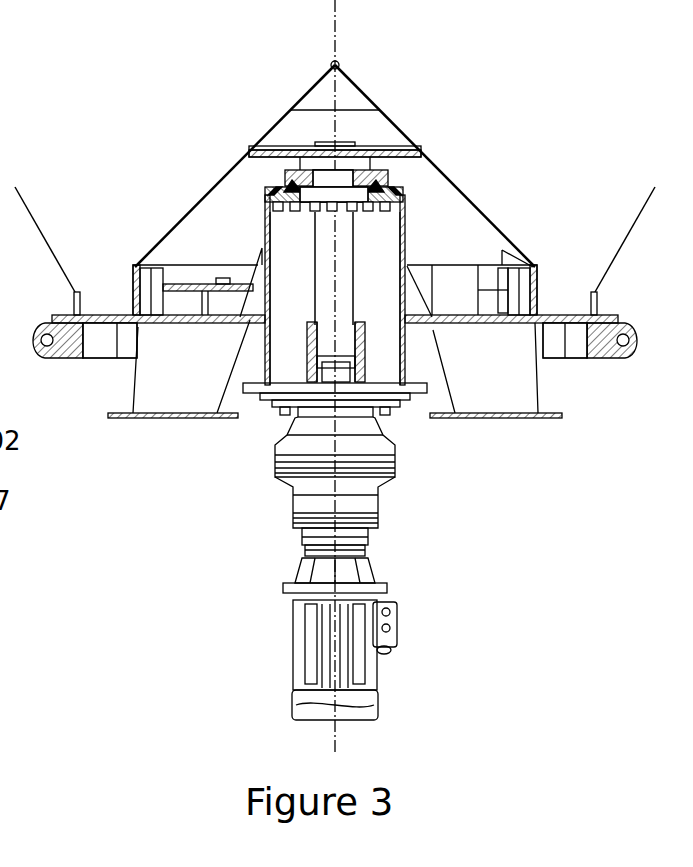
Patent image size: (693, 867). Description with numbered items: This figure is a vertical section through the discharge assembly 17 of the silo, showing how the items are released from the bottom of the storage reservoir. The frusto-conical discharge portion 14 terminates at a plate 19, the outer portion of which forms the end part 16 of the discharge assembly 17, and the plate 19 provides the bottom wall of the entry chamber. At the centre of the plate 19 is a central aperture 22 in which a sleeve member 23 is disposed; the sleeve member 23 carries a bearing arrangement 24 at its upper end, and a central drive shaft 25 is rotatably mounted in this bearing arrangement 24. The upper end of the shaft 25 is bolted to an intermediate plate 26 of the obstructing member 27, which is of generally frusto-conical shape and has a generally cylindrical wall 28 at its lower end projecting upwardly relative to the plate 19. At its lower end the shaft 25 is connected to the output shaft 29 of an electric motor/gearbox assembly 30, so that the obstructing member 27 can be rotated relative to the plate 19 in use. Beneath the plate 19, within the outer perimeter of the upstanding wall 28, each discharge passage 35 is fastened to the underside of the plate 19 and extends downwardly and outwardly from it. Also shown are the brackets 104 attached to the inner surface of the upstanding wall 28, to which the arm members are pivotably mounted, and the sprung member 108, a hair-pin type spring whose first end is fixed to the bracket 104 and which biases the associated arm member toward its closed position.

The discharge portion 14 is at (52, 258).
The end part 16 is at (614, 315).
The discharge assembly 17 is at (112, 366).
The plate 19 is at (572, 358).
The central aperture 22 is at (390, 312).
The sleeve member 23 is at (406, 212).
The bearing arrangement 24 is at (393, 180).
The central drive shaft 25 is at (332, 251).
The intermediate plate 26 is at (392, 150).
The obstructing member 27 is at (266, 130).
The cylindrical wall 28 is at (538, 298).
The output shaft 29 is at (311, 343).
The electric motor/gearbox assembly 30 is at (386, 577).
The discharge passage 35 is at (187, 377).
The bracket 104 is at (135, 266).
The sprung member 108 is at (103, 307).